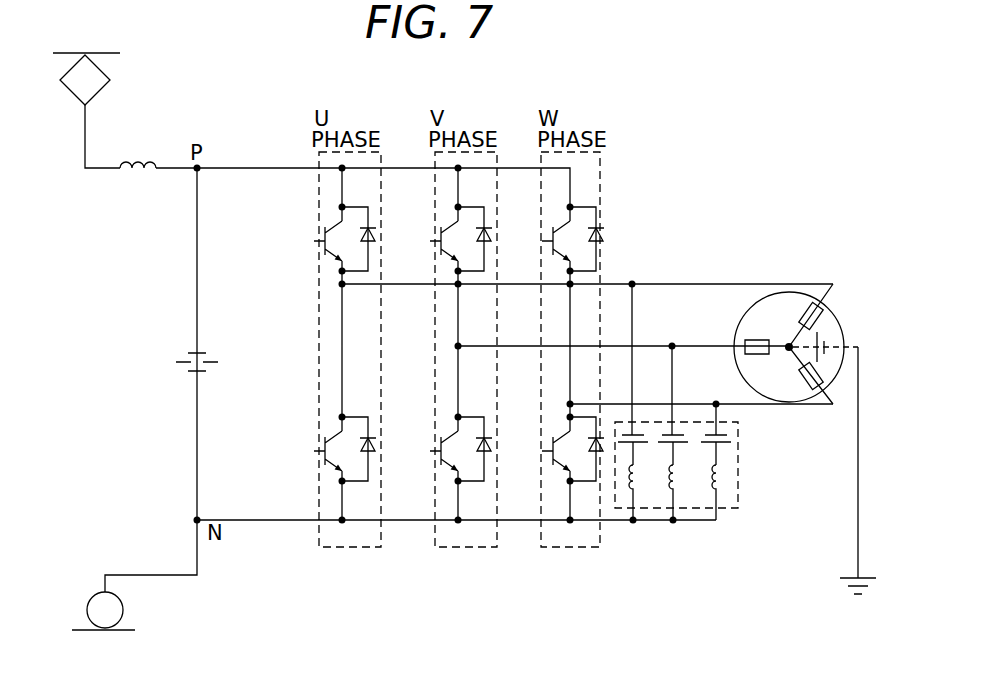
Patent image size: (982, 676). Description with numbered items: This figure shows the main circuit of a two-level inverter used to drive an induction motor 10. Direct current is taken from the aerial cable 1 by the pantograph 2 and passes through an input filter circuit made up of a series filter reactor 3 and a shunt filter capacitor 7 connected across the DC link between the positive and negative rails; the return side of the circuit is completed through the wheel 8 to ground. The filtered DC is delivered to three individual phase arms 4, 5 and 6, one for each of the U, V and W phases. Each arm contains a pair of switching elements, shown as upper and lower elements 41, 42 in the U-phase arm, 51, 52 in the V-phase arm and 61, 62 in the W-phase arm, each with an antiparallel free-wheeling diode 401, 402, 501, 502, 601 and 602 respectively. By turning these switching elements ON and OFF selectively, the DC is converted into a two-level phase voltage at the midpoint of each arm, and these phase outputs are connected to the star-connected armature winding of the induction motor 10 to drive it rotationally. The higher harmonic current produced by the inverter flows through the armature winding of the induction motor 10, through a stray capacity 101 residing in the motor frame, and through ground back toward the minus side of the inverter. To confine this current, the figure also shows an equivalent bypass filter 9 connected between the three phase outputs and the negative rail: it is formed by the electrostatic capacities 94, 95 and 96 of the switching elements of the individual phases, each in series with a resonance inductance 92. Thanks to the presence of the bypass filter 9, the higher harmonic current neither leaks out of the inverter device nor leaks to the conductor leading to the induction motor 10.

The aerial cable 1 is at (97, 53).
The pantograph 2 is at (108, 78).
The filter reactor 3 is at (146, 165).
The phase arm 4 is at (318, 165).
The phase arm 5 is at (434, 165).
The phase arm 6 is at (601, 166).
The filter capacitor 7 is at (180, 368).
The wheel (rail return) 8 is at (124, 612).
The bypass filter 9 is at (740, 432).
The induction motor 10 is at (757, 299).
The stray capacity 101 is at (827, 336).
The U-phase upper switching element 41 is at (316, 241).
The U-phase lower switching element 42 is at (316, 451).
The U-phase upper free-wheeling diode 401 is at (377, 236).
The U-phase lower free-wheeling diode 402 is at (377, 446).
The V-phase upper switching element 51 is at (432, 241).
The V-phase lower switching element 52 is at (432, 451).
The V-phase upper free-wheeling diode 501 is at (493, 236).
The V-phase lower free-wheeling diode 502 is at (493, 446).
The W-phase upper switching element 61 is at (544, 241).
The W-phase lower switching element 62 is at (544, 451).
The W-phase upper free-wheeling diode 601 is at (606, 236).
The W-phase lower free-wheeling diode 602 is at (590, 452).
The resonance inductance 92 is at (735, 530).
The electrostatic capacity 94 is at (646, 444).
The electrostatic capacity 95 is at (686, 444).
The electrostatic capacity 96 is at (729, 444).